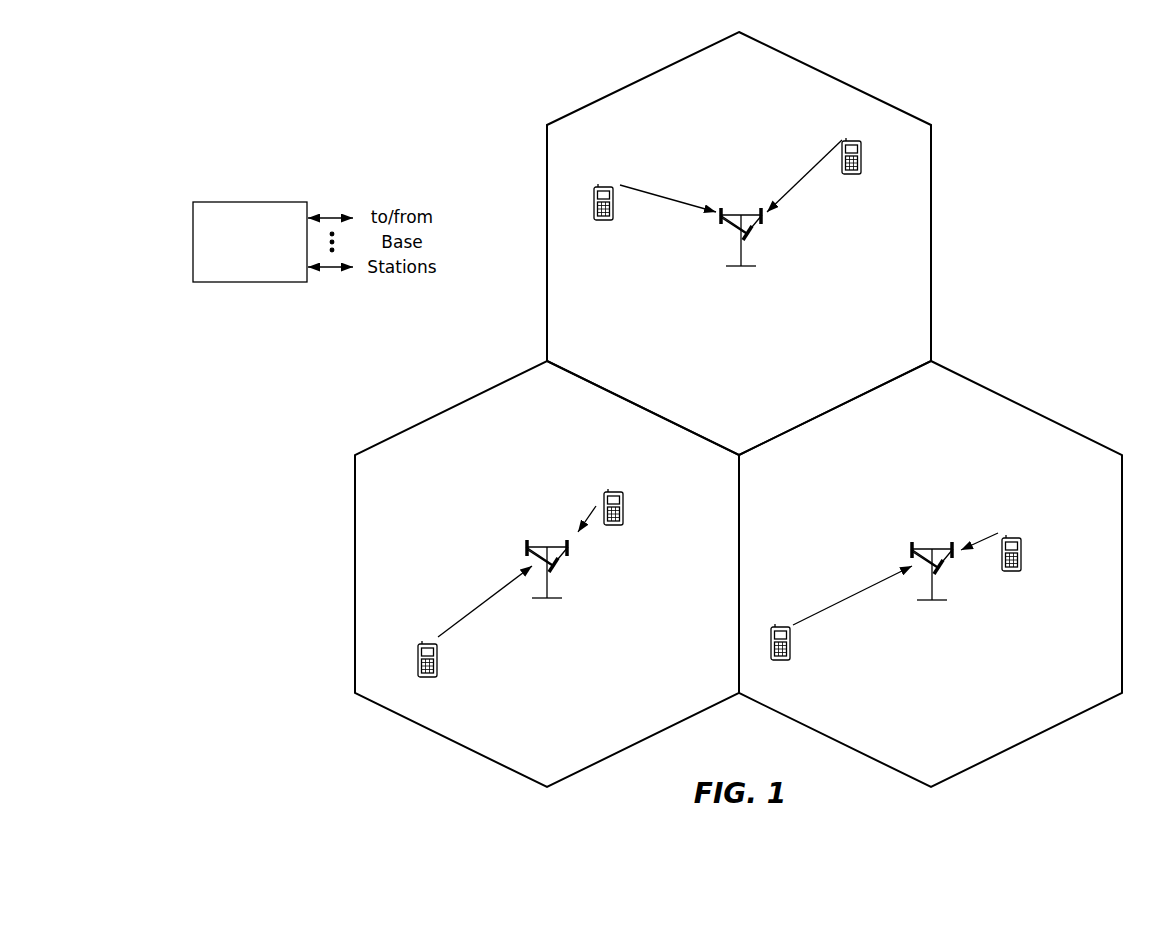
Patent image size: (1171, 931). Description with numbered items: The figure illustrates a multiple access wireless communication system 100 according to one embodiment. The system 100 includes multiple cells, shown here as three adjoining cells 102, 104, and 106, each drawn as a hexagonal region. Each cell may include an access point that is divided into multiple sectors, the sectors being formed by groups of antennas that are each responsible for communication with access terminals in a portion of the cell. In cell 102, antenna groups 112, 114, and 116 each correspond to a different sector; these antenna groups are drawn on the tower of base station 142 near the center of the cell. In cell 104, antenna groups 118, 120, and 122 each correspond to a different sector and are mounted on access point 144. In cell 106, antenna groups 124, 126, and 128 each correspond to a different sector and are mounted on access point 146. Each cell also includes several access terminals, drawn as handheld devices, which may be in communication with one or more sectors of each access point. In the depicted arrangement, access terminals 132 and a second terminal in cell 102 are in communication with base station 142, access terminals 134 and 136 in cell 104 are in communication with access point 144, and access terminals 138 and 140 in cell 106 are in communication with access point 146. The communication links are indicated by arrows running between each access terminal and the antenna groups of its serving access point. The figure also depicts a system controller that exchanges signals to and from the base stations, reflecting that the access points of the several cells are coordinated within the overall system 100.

The multiple access wireless communication system 100 is at (1071, 90).
The cell 102 is at (1000, 395).
The cell 104 is at (440, 412).
The cell 106 is at (826, 74).
The antenna group 112 is at (911, 548).
The antenna group 114 is at (941, 572).
The antenna group 116 is at (954, 553).
The antenna group 118 is at (556, 566).
The antenna group 120 is at (569, 548).
The antenna group 122 is at (526, 546).
The antenna group 124 is at (719, 222).
The antenna group 126 is at (751, 238).
The antenna group 128 is at (766, 220).
The access terminal 132 is at (781, 626).
The access terminal 134 is at (611, 490).
The access terminal 136 is at (422, 641).
The access terminal 138 is at (603, 222).
The access terminal 140 is at (851, 176).
The base station 142 is at (928, 561).
The access point 144 is at (548, 548).
The access point 146 is at (738, 222).